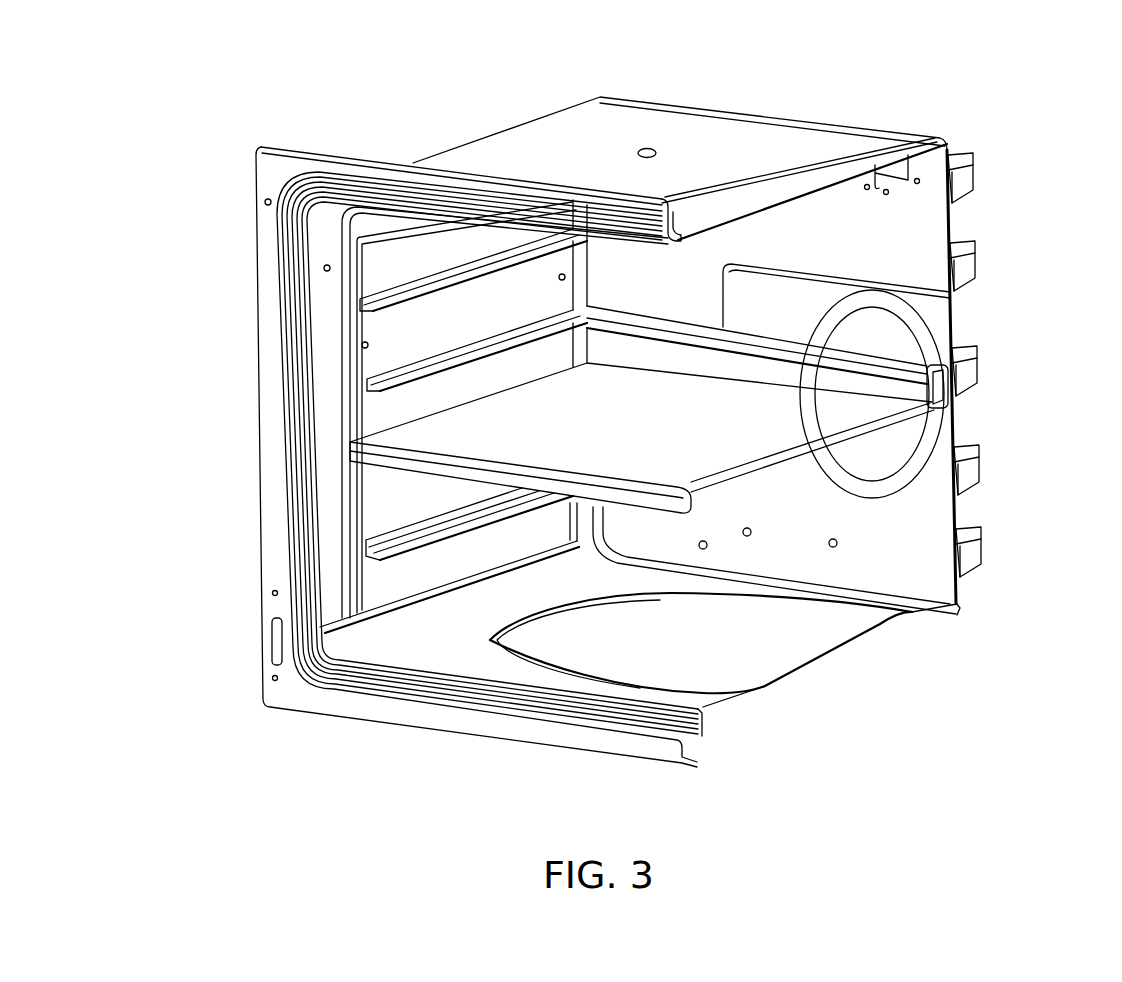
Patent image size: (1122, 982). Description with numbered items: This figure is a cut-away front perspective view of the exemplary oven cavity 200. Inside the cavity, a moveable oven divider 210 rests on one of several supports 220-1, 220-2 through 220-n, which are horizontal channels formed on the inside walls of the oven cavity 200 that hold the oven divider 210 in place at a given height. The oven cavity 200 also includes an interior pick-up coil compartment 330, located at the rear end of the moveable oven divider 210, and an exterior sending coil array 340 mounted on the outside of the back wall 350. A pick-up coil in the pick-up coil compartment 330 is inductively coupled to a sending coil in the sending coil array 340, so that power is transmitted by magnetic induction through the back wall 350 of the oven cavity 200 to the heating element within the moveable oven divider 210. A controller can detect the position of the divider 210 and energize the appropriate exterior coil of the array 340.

The oven cavity 200 is at (180, 100).
The moveable oven divider 210 is at (714, 457).
The support 220-1 is at (462, 282).
The support 220-2 is at (450, 372).
The support 220-n is at (453, 527).
The interior pick-up coil compartment 330 is at (937, 410).
The exterior sending coil array 340 is at (999, 148).
The back wall 350 is at (690, 296).